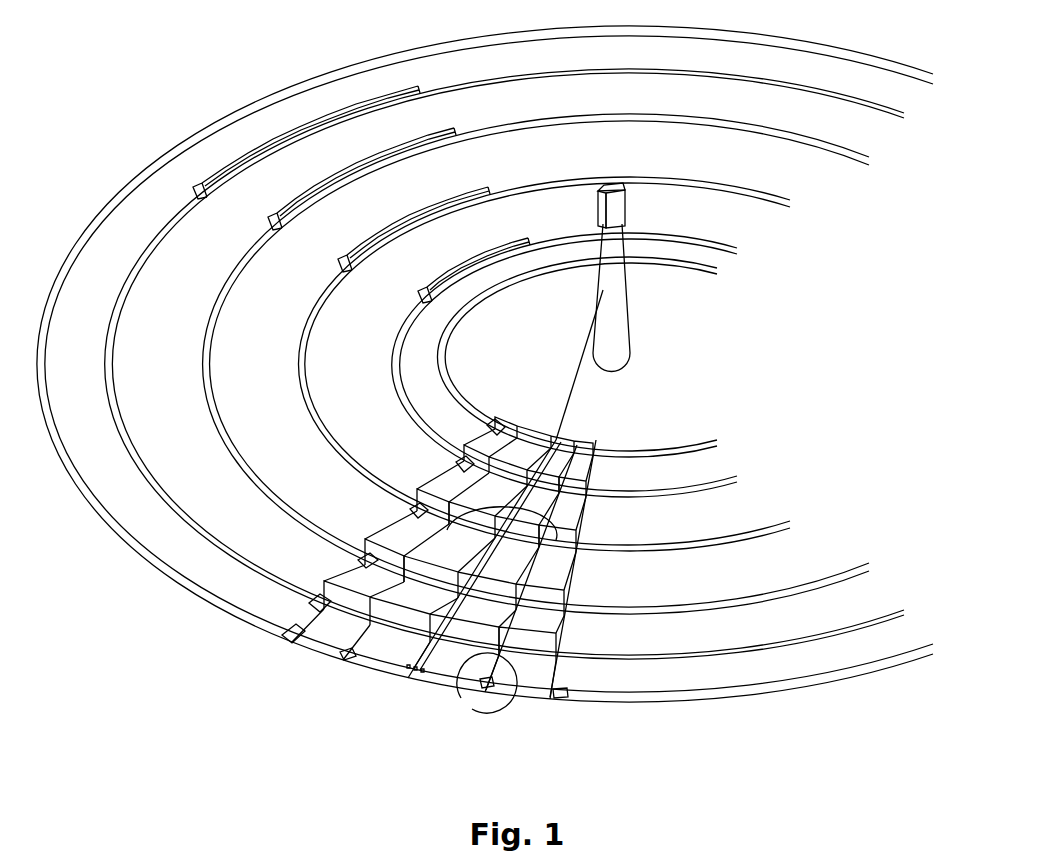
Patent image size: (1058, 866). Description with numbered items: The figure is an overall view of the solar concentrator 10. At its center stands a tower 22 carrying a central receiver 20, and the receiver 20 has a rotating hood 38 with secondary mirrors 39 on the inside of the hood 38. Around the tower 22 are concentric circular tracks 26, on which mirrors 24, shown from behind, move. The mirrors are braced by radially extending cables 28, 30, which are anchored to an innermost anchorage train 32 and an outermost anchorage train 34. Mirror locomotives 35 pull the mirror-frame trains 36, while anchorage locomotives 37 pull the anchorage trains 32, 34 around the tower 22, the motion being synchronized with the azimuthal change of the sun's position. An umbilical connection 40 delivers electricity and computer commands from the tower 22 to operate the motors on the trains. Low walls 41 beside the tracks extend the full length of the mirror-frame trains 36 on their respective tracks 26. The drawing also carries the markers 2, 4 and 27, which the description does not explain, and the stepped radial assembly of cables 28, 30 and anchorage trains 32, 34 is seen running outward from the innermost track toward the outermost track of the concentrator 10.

The solar concentrator 10 is at (283, 78).
The step region 2 is at (549, 550).
The step detail region 4 is at (506, 718).
The central receiver 20 is at (626, 208).
The tower 22 is at (622, 318).
The mirrors 24 is at (545, 642).
The concentric circular tracks 26 is at (303, 370).
The step 27 is at (582, 540).
The radially extending cable 28 is at (404, 518).
The radially extending cable 30 is at (355, 566).
The innermost anchorage train 32 is at (576, 448).
The outermost anchorage train 34 is at (449, 694).
The mirror locomotive 35 is at (417, 503).
The mirror-frame train 36 is at (596, 489).
The anchorage locomotive 37 is at (497, 421).
The rotating hood 38 is at (624, 192).
The secondary mirrors 39 is at (600, 201).
The umbilical connection 40 is at (565, 393).
The low walls 41 is at (410, 240).